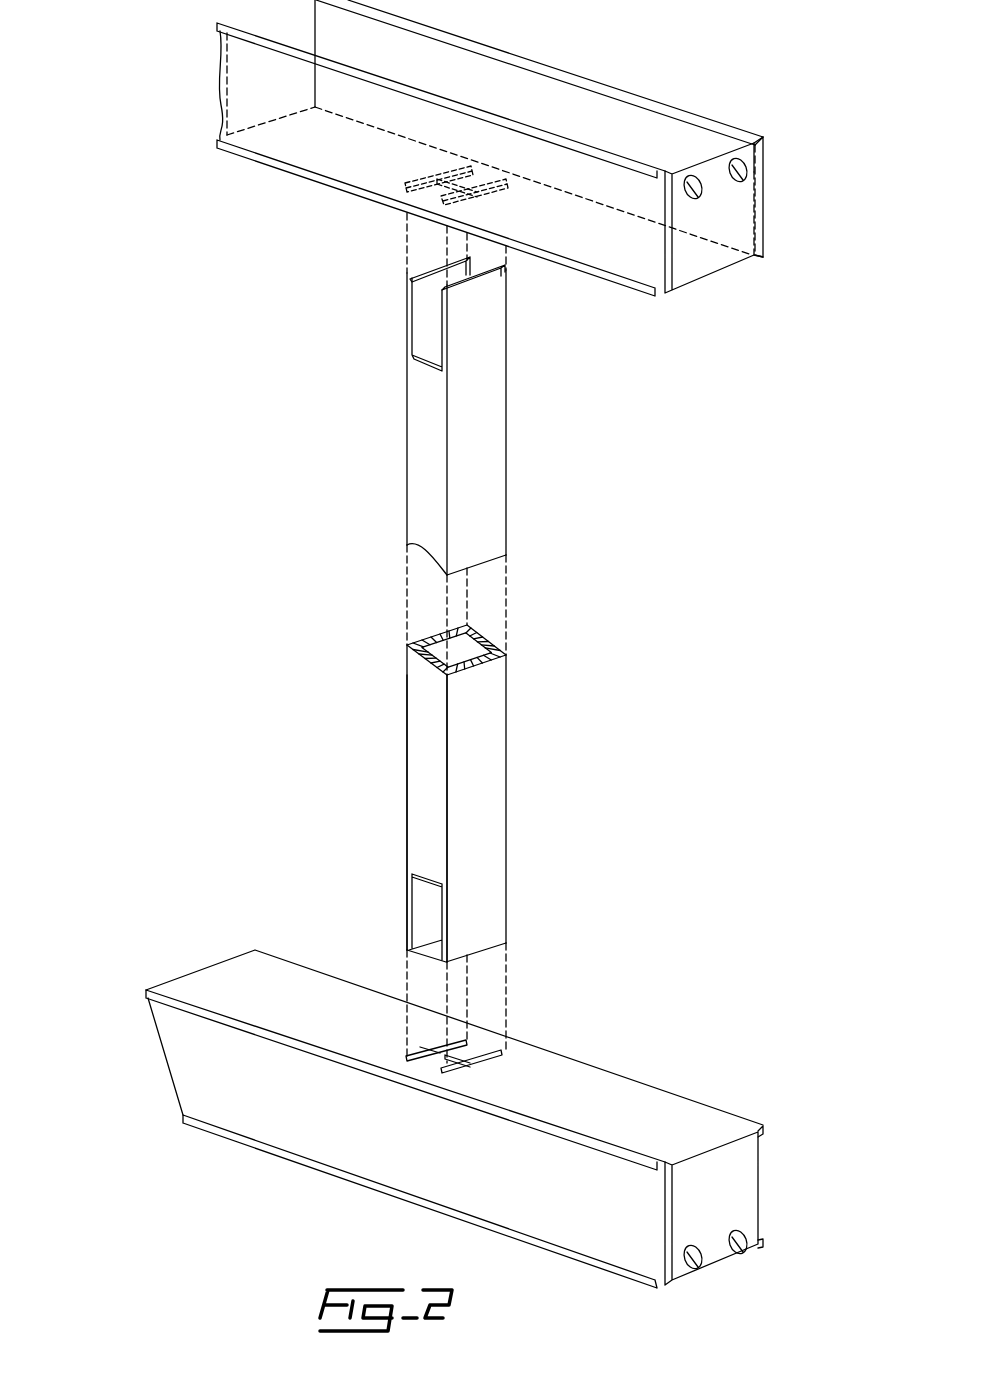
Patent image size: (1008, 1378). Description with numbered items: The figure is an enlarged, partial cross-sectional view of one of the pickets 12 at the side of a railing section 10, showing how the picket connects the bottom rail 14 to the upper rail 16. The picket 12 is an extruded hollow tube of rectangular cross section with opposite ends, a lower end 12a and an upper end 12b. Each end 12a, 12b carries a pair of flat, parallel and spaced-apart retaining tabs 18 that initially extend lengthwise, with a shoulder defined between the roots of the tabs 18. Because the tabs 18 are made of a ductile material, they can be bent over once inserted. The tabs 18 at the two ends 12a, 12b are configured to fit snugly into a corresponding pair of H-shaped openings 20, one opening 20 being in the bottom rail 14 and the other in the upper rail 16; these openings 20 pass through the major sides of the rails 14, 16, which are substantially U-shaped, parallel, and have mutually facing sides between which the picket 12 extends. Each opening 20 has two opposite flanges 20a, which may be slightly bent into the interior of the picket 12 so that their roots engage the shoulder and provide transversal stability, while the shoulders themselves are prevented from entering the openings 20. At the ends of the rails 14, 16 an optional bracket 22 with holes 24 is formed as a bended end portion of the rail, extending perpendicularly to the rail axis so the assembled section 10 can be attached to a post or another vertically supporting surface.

The section 10 is at (135, 188).
The picket 12 is at (485, 714).
The lower end of picket 12a is at (563, 868).
The upper end of picket 12b is at (562, 386).
The bottom rail 14 is at (200, 1070).
The upper rail 16 is at (682, 140).
The retaining tabs 18 is at (440, 343).
The H-shaped opening 20 is at (418, 178).
The flanges of the H-shaped opening 20a is at (478, 1048).
The bracket 22 is at (703, 255).
The holes 24 is at (700, 192).